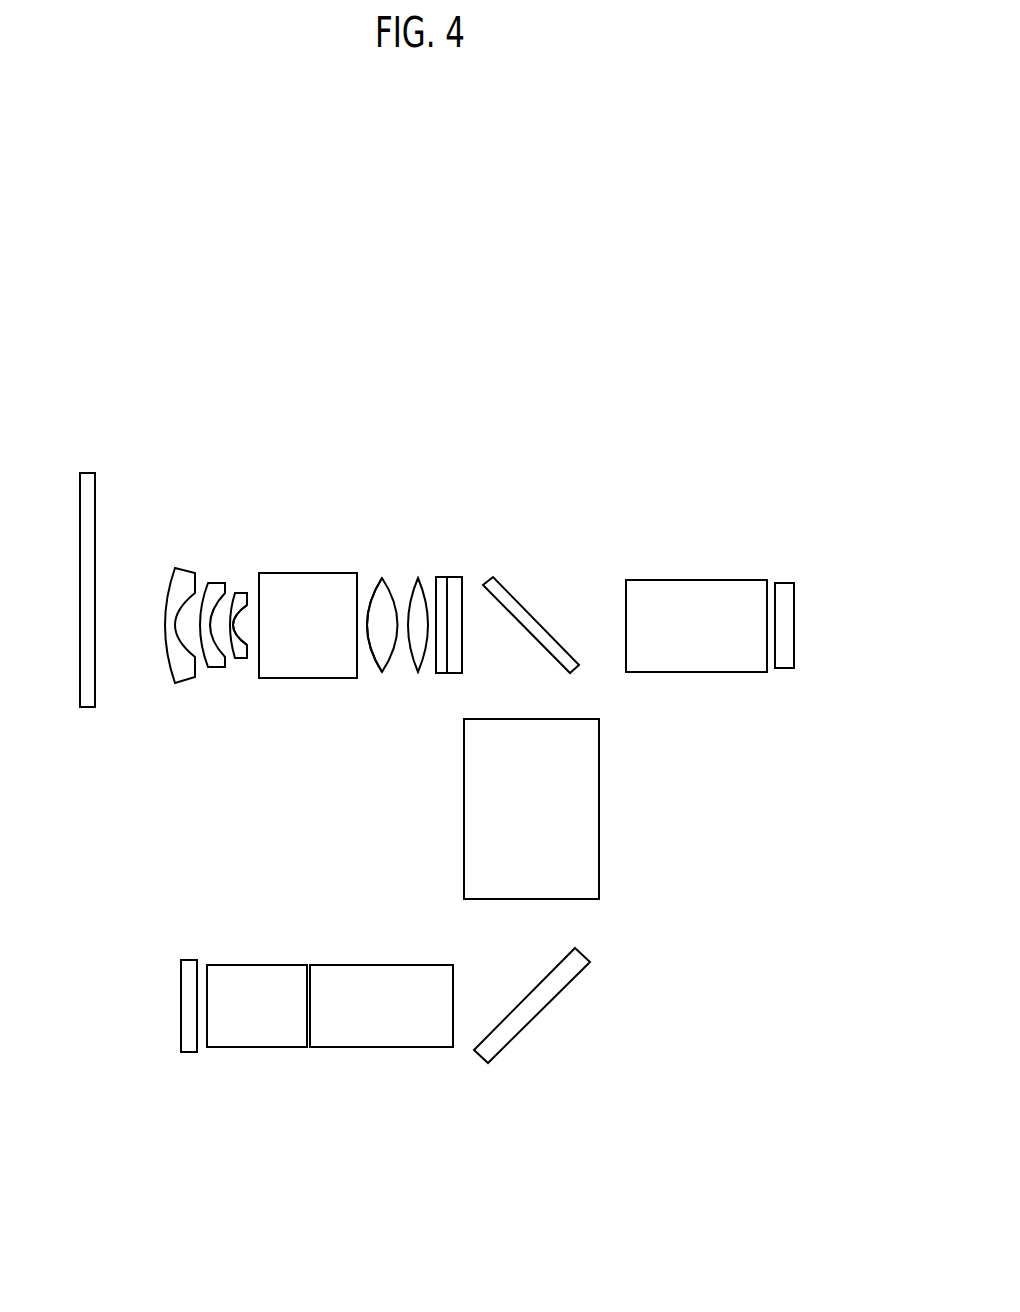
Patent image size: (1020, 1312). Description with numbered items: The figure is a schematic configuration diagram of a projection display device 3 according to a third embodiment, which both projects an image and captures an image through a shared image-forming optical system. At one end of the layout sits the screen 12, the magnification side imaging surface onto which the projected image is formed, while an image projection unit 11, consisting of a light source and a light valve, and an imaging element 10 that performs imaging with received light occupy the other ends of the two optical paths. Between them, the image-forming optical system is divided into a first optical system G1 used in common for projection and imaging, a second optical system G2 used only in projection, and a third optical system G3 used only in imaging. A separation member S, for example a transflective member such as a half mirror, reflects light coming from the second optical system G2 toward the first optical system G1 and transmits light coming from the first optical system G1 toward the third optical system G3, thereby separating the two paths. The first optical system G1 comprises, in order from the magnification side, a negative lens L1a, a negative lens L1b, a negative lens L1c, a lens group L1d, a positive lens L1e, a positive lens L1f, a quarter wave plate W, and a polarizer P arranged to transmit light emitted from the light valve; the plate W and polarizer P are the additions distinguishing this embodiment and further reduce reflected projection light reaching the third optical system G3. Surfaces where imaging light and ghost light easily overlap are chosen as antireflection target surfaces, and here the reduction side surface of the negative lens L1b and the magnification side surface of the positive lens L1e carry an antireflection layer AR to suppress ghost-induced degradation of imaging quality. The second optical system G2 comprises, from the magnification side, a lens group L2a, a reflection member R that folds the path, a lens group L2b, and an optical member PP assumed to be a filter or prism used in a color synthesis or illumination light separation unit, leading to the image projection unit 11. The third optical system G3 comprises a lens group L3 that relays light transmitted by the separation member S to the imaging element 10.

The projection display device 3 is at (548, 305).
The screen 12 is at (88, 636).
The imaging element 10 is at (785, 647).
The image projection unit 11 is at (188, 1028).
The first optical system G1 is at (512, 370).
The second optical system G2 is at (762, 900).
The third optical system G3 is at (723, 472).
The negative lens L1a is at (187, 567).
The negative lens L1b is at (219, 582).
The negative lens L1c is at (236, 593).
The lens group L1d is at (316, 576).
The positive lens L1e is at (381, 578).
The positive lens L1f is at (418, 578).
The quarter wave plate W is at (443, 584).
The polarizer P is at (454, 584).
The separation member S is at (525, 603).
The antireflection layer AR is at (232, 645).
The lens group L3 is at (697, 590).
The lens group L2a is at (600, 865).
The lens group L2b is at (407, 1047).
The reflection member R is at (548, 1002).
The optical member PP is at (268, 1047).